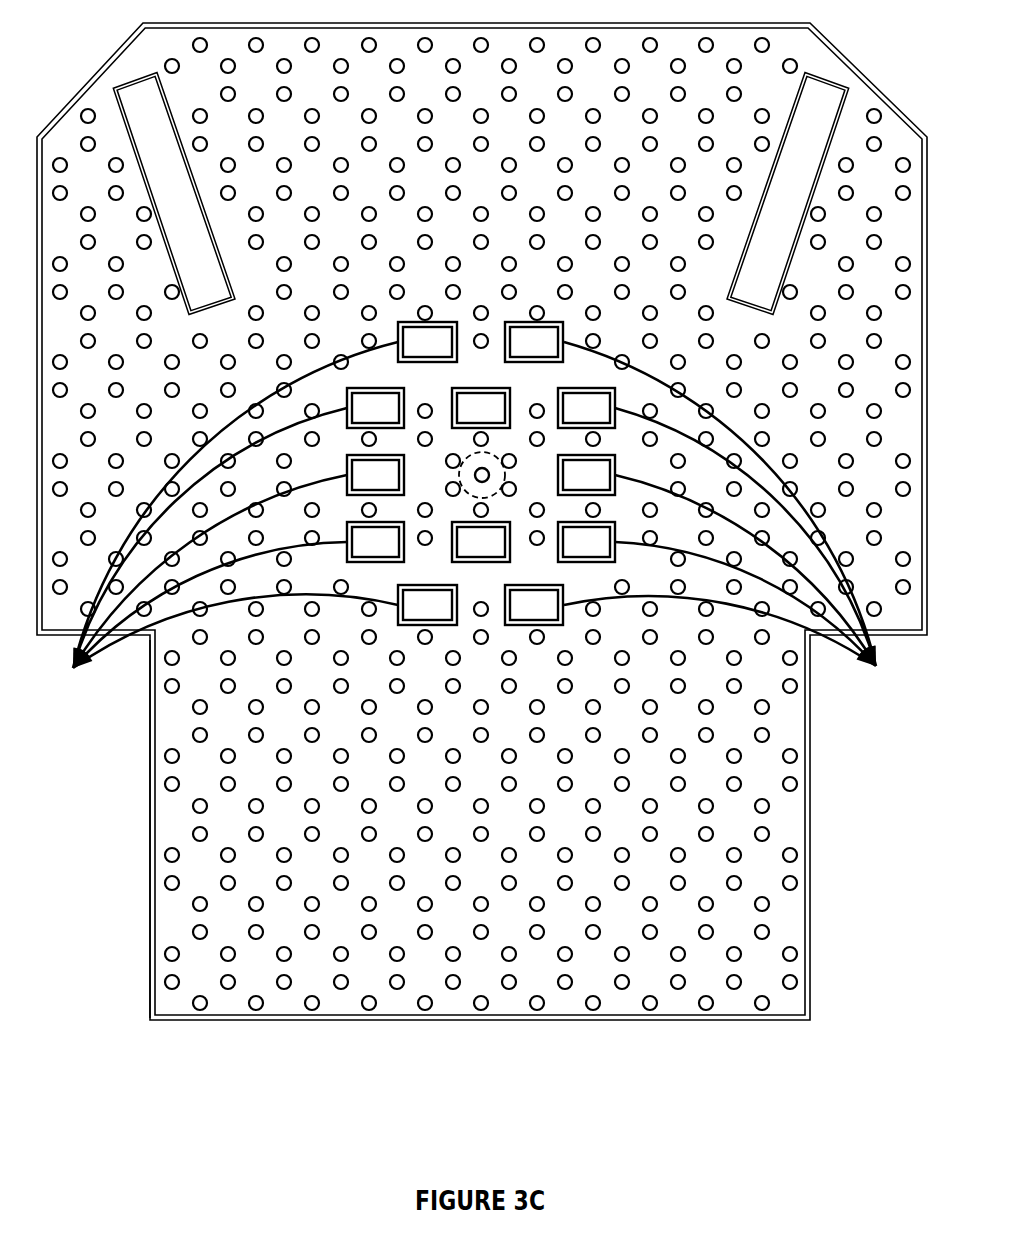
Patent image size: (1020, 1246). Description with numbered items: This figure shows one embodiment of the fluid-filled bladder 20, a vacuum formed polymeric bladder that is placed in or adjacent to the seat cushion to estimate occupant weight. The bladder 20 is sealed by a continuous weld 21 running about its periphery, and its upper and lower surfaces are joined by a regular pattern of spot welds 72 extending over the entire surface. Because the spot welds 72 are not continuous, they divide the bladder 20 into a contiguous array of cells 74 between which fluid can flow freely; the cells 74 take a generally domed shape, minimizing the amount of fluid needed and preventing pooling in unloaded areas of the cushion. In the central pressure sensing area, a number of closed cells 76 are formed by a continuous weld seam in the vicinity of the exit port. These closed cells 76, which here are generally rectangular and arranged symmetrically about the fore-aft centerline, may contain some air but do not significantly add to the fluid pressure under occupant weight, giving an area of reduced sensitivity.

The bladder 20 is at (846, 733).
The continuous weld 21 is at (152, 787).
The spot welds 72 is at (368, 1010).
The cells 74 is at (257, 965).
The closed cells 76 is at (476, 522).